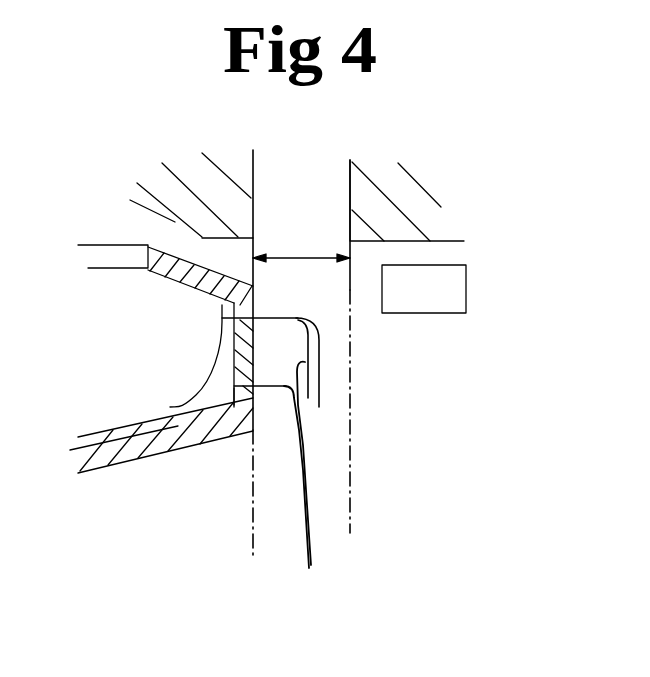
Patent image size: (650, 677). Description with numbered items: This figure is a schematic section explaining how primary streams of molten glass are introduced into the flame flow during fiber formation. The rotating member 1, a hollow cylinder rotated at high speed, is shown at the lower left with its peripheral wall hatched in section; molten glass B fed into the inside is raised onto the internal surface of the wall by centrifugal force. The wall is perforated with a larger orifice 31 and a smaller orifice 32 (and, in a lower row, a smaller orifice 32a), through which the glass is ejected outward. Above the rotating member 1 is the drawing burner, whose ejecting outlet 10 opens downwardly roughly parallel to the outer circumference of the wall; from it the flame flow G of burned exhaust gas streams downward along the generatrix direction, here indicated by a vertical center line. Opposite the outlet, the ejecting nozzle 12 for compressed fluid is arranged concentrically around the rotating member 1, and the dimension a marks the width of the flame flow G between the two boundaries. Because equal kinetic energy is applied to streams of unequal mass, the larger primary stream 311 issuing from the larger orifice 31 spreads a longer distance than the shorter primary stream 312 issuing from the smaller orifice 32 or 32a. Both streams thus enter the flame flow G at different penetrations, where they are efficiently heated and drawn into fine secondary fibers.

The ejecting outlet 10 is at (253, 193).
The ejecting nozzle 12 is at (449, 313).
The rotating member 1 is at (133, 463).
The larger orifice 31 is at (234, 318).
The smaller orifice 32 is at (198, 350).
The smaller orifice 32a is at (234, 386).
The larger primary stream 311 is at (320, 372).
The shorter primary stream 312 is at (306, 479).
The molten glass B is at (215, 400).
The flame flow G is at (325, 449).
The width of flame flow a is at (301, 246).